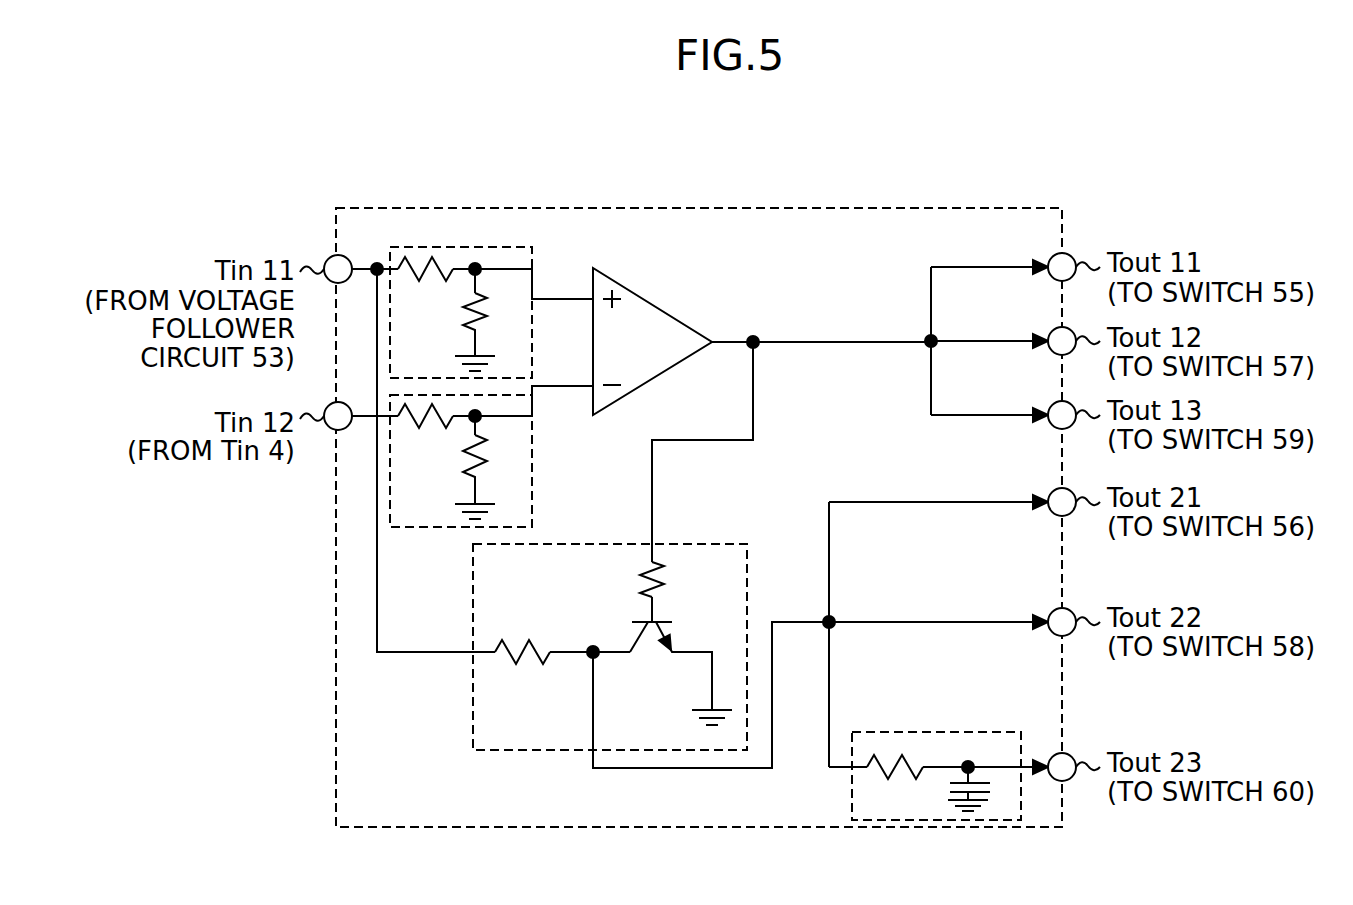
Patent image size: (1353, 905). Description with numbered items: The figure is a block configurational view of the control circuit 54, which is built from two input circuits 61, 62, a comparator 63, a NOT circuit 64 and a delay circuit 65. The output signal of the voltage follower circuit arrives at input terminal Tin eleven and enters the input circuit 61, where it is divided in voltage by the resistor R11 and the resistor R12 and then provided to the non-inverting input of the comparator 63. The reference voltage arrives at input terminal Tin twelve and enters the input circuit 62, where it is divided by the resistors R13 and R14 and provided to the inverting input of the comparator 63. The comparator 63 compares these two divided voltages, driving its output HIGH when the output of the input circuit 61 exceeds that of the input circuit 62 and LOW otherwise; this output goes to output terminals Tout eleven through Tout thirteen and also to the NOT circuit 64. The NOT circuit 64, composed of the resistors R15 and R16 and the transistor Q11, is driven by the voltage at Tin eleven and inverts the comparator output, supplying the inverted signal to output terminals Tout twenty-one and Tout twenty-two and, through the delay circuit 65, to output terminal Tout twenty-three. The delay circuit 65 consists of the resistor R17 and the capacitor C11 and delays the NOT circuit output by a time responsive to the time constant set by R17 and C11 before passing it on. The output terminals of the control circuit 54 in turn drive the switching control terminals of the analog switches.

The control circuit 54 is at (899, 208).
The input circuit 61 is at (472, 276).
The input circuit 62 is at (484, 456).
The comparator 63 is at (655, 301).
The NOT circuit 64 is at (615, 656).
The delay circuit 65 is at (906, 776).
The resistor R11 is at (426, 289).
The resistor R12 is at (494, 320).
The resistor R13 is at (426, 436).
The resistor R14 is at (494, 467).
The resistor R15 is at (523, 634).
The resistor R16 is at (686, 579).
The resistor R17 is at (896, 785).
The transistor Q11 is at (679, 661).
The capacitor C11 is at (996, 787).